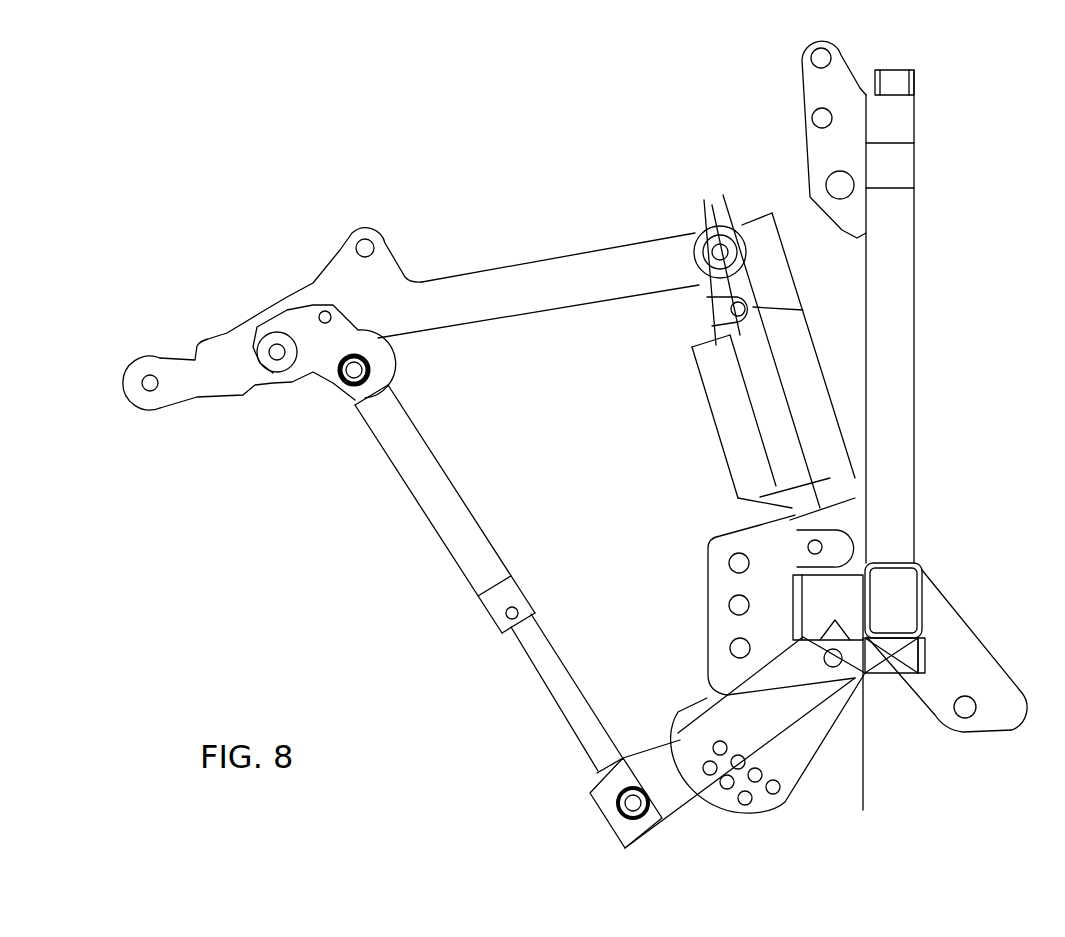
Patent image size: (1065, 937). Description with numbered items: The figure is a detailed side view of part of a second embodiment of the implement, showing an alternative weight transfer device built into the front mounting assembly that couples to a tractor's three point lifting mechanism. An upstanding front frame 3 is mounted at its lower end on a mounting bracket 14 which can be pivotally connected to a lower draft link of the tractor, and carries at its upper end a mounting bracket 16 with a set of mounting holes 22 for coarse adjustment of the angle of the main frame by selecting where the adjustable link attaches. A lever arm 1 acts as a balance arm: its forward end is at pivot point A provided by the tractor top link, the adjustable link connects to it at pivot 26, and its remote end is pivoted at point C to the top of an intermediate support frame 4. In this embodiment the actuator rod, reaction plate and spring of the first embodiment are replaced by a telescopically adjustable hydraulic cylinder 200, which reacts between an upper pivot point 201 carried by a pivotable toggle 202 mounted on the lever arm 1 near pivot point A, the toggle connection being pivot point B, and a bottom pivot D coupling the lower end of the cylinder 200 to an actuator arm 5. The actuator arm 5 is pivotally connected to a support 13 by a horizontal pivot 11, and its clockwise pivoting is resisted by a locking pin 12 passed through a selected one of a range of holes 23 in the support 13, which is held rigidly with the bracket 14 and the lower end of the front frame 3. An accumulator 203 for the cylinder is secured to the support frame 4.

The lever arm 1 is at (518, 288).
The front frame 3 is at (900, 383).
The intermediate support frame 4 is at (795, 340).
The actuator arm 5 is at (680, 790).
The horizontal pivot 11 is at (833, 658).
The locking pin 12 is at (727, 782).
The support 13 is at (812, 747).
The mounting bracket 14 is at (722, 545).
The mounting bracket 16 is at (815, 91).
The mounting holes 22 is at (812, 57).
The holes 23 is at (773, 787).
The pivot 26 is at (365, 248).
The hydraulic cylinder 200 is at (445, 520).
The upper pivot point 201 is at (366, 371).
The pivotable toggle 202 is at (318, 383).
The accumulator 203 is at (725, 396).
The pivot point A is at (150, 383).
The pivot point B is at (316, 270).
The pivot point C is at (720, 252).
The bottom pivot D is at (633, 803).